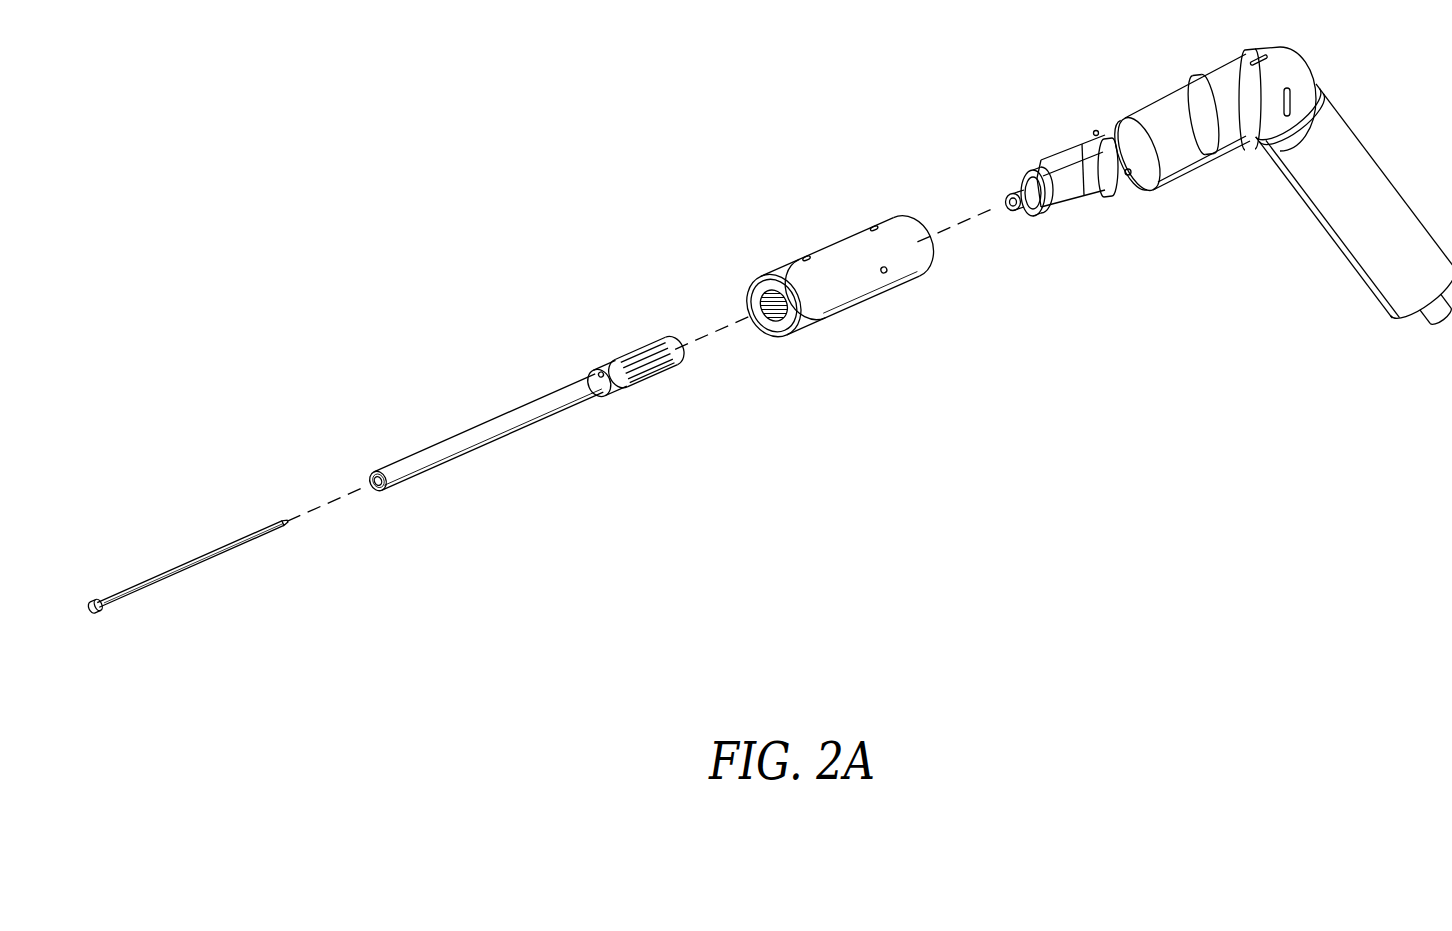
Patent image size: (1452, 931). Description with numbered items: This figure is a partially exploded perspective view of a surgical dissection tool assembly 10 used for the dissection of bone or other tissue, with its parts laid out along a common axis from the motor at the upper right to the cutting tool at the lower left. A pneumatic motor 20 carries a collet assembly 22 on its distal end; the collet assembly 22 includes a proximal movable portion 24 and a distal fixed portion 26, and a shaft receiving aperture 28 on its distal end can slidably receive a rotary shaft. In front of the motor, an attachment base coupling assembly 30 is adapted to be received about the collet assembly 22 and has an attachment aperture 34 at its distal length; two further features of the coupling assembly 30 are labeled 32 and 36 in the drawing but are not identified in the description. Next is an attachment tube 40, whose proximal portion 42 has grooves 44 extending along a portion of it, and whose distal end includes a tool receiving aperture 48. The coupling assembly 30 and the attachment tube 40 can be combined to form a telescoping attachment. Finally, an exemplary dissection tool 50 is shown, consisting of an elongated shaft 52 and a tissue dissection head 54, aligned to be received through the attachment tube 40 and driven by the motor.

The dissection tool assembly 10 is at (764, 331).
The pneumatic motor 20 is at (1222, 195).
The collet assembly 22 is at (1055, 201).
The proximal movable portion 24 is at (1108, 167).
The distal fixed portion 26 is at (1063, 175).
The shaft receiving aperture 28 is at (1015, 200).
The attachment base coupling assembly 30 is at (840, 284).
The coupler proximal end 32 is at (918, 241).
The attachment aperture 34 is at (774, 306).
The coupler distal collar 36 is at (781, 302).
The attachment tube 40 is at (476, 471).
The proximal portion 42 is at (623, 348).
The grooves 44 is at (618, 352).
The tool receiving aperture 48 is at (379, 480).
The dissection tool 50 is at (183, 550).
The elongated shaft 52 is at (285, 522).
The tissue dissection head 54 is at (95, 606).